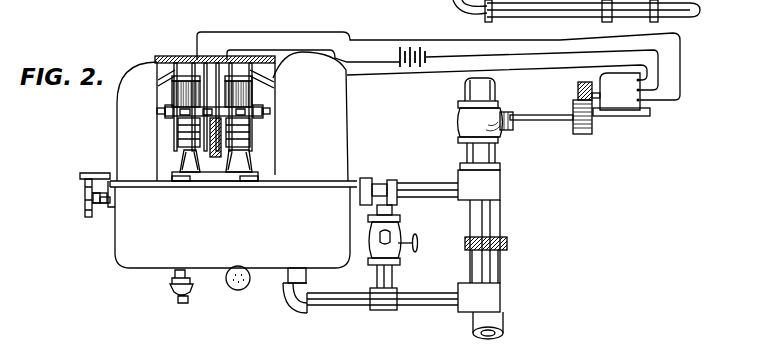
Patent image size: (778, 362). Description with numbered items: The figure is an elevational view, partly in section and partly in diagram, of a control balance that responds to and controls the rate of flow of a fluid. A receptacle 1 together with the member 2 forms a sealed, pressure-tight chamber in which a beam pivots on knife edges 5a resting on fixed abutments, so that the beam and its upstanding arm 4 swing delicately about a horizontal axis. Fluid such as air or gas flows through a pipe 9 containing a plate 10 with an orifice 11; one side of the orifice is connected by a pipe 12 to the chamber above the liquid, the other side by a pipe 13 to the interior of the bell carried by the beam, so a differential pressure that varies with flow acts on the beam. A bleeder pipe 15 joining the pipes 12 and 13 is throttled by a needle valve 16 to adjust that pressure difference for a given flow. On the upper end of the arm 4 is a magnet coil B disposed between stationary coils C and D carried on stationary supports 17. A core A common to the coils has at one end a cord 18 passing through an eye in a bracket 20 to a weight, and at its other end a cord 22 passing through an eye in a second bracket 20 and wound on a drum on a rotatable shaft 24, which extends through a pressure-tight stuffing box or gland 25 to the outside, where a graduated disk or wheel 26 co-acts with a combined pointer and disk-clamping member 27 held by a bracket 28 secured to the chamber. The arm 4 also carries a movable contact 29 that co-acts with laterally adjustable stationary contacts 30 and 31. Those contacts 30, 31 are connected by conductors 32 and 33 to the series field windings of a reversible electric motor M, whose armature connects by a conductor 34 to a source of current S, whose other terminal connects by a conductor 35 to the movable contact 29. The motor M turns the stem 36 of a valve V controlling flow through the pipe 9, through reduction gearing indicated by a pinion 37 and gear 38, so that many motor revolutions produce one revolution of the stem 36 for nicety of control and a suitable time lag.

The receptacle 1 is at (140, 268).
The member 2 is at (117, 105).
The upstanding arm 4 is at (212, 182).
The knife edges 5a is at (220, 181).
The pipe 9 is at (493, 90).
The plate 10 is at (507, 238).
The orifice 11 is at (490, 247).
The pipe 12 is at (425, 183).
The pipe 13 is at (306, 278).
The bleeder pipe 15 is at (395, 224).
The needle valve 16 is at (576, 11).
The stationary supports 17 is at (182, 163).
The cord 18 is at (268, 110).
The bracket 20 is at (163, 56).
The cord 22 is at (167, 116).
The rotatable shaft 24 is at (93, 212).
The stuffing box or gland 25 is at (100, 210).
The disk or wheel 26 is at (85, 208).
The index or pointer and disk-clamping member 27 is at (80, 180).
The bracket 28 is at (87, 173).
The movable contact 29 is at (227, 90).
The stationary contact 30 is at (210, 67).
The stationary contact 31 is at (253, 77).
The conductor 32 is at (203, 47).
The conductor 33 is at (590, 71).
The conductor 34 is at (460, 57).
The conductor 35 is at (380, 62).
The valve stem 36 is at (540, 121).
The pinion 37 is at (578, 90).
The gear 38 is at (577, 134).
The core A is at (175, 124).
The magnet coil B is at (207, 110).
The stationary coil C is at (180, 96).
The stationary coil D is at (256, 97).
The reversible electric motor M is at (622, 112).
The source of current S is at (417, 53).
The valve V is at (463, 120).